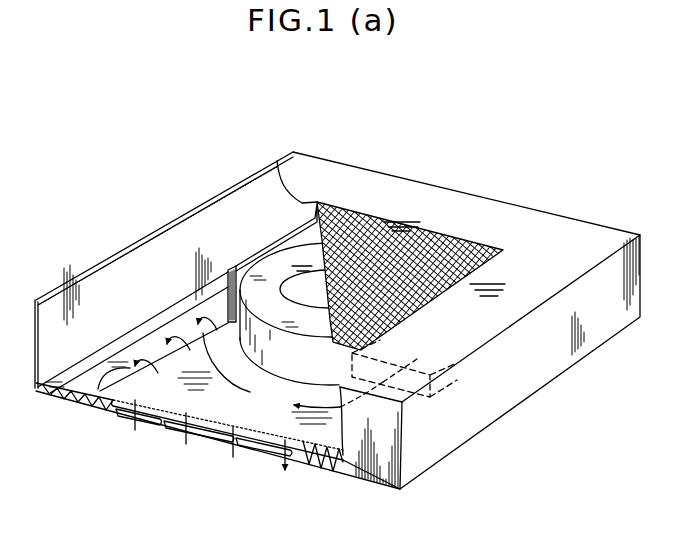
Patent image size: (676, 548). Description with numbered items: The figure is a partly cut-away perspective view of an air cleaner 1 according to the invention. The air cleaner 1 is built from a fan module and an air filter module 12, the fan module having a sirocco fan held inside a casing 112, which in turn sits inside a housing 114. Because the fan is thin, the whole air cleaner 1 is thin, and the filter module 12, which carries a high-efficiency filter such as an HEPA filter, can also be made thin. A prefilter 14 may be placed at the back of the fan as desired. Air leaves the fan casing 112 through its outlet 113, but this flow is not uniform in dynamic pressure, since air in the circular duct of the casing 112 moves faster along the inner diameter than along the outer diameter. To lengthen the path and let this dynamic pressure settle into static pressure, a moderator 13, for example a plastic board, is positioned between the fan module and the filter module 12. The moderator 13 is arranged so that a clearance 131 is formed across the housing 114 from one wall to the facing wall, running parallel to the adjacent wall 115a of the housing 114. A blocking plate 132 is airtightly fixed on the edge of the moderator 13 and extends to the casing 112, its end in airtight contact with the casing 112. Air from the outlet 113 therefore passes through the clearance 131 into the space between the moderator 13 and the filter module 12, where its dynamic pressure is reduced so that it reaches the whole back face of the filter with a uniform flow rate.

The air cleaner 1 is at (593, 222).
The air filter module 12 is at (97, 390).
The moderator 13 is at (178, 390).
The prefilter 14 is at (378, 218).
The casing 112 is at (277, 268).
The outlet 113 is at (417, 373).
The housing 114 is at (529, 380).
The wall 115a is at (99, 285).
The clearance 131 is at (147, 335).
The blocking plate 132 is at (233, 266).